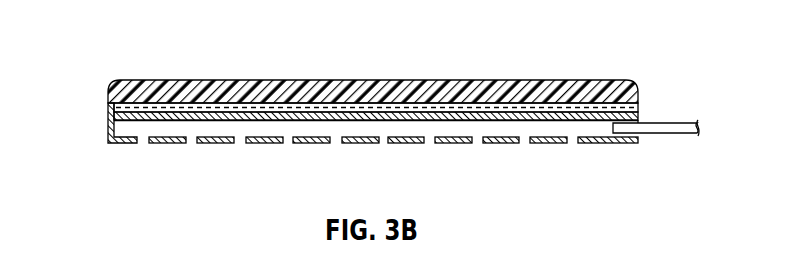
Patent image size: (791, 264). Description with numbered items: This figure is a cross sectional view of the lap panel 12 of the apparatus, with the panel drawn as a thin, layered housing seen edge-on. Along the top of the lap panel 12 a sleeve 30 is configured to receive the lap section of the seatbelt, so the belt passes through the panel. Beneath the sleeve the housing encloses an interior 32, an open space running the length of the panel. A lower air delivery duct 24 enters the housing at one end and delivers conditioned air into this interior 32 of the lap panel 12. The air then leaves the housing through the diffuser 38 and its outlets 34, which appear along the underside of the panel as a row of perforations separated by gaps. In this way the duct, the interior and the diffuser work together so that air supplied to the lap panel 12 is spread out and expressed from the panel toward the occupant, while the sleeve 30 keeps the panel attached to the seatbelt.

The lap panel 12 is at (242, 80).
The lower air delivery duct 24 is at (657, 133).
The sleeve 30 is at (105, 105).
The interior 32 is at (573, 128).
The diffuser outlets 34 is at (241, 145).
The diffuser 38 is at (125, 143).